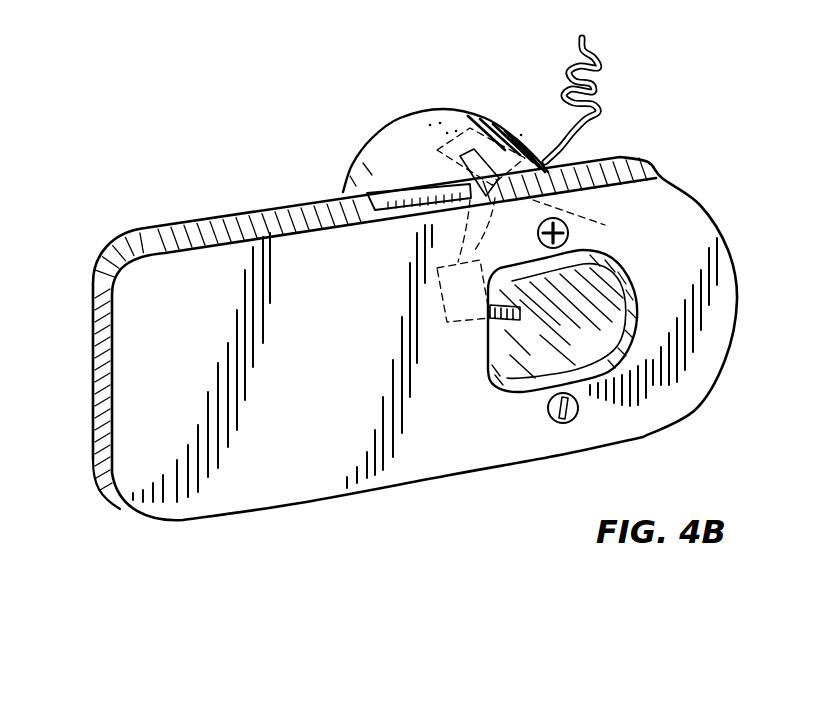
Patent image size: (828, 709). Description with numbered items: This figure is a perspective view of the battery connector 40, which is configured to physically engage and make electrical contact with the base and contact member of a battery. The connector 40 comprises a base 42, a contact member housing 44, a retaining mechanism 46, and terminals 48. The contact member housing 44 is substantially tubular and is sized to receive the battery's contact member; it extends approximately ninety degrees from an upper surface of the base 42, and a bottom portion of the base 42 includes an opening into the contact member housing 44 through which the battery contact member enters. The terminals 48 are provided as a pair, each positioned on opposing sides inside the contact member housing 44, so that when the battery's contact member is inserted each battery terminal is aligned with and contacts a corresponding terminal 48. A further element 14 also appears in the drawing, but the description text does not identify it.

The battery connector 40 is at (383, 271).
The base 42 is at (93, 370).
The contact member housing 44 is at (446, 108).
The retaining mechanism 46 is at (345, 196).
The terminals 48 is at (590, 262).
The coil hook 14 is at (600, 90).